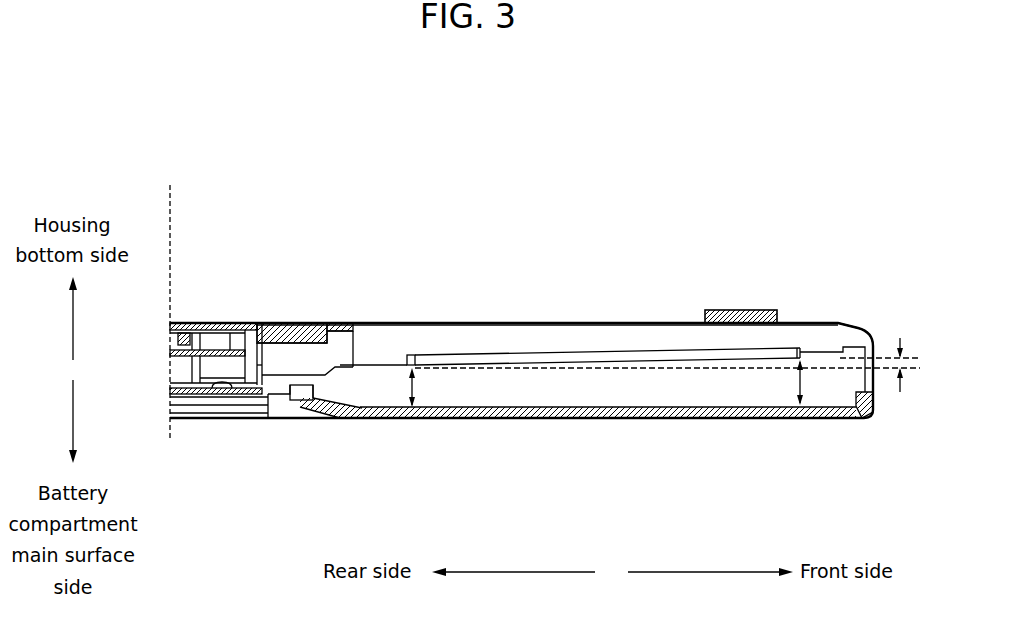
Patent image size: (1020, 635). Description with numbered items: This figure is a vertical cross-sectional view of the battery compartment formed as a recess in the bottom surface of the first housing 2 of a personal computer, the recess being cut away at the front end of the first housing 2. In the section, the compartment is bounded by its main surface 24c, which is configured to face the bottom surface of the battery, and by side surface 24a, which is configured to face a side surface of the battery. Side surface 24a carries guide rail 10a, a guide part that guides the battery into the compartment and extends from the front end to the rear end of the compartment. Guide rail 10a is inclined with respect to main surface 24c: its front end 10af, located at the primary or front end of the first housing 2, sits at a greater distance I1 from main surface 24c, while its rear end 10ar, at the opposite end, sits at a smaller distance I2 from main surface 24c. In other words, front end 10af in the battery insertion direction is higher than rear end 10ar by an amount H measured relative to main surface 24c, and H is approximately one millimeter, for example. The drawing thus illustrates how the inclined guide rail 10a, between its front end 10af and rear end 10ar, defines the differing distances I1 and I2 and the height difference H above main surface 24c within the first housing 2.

The first housing 2 is at (583, 321).
The side surface 24a is at (650, 333).
The main surface 24c is at (522, 402).
The guide rail 10a is at (477, 328).
The rear end of guide rail 10ar is at (398, 327).
The front end of guide rail 10af is at (803, 340).
The distance between front end of guide rail and main surface I1 is at (793, 388).
The distance between rear end of guide rail and main surface I2 is at (418, 388).
The height difference H is at (900, 392).